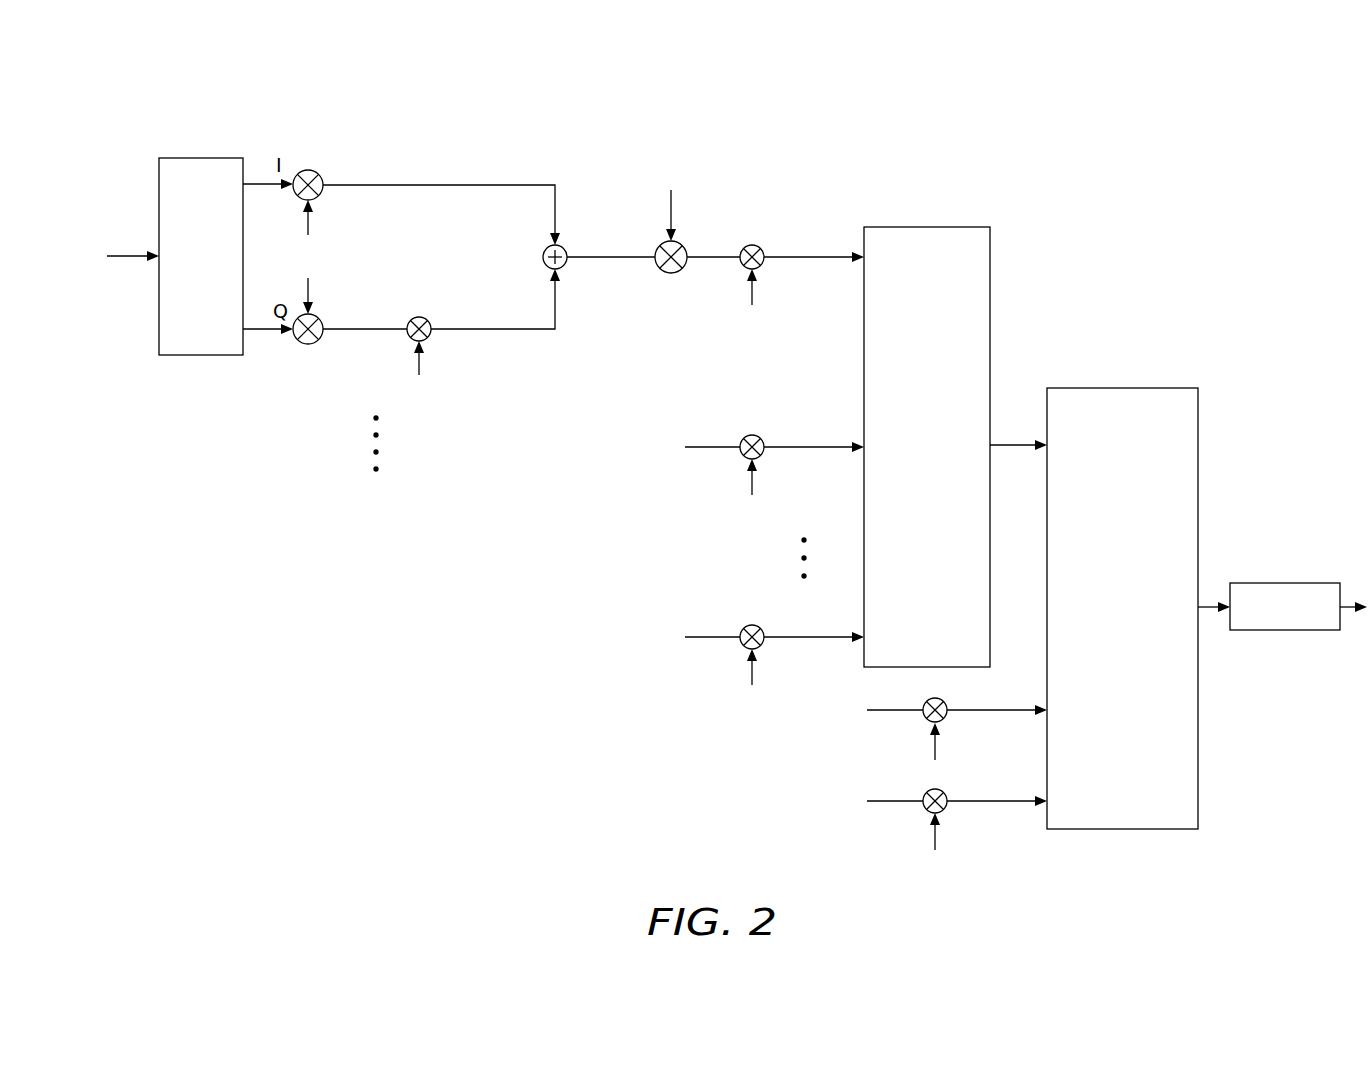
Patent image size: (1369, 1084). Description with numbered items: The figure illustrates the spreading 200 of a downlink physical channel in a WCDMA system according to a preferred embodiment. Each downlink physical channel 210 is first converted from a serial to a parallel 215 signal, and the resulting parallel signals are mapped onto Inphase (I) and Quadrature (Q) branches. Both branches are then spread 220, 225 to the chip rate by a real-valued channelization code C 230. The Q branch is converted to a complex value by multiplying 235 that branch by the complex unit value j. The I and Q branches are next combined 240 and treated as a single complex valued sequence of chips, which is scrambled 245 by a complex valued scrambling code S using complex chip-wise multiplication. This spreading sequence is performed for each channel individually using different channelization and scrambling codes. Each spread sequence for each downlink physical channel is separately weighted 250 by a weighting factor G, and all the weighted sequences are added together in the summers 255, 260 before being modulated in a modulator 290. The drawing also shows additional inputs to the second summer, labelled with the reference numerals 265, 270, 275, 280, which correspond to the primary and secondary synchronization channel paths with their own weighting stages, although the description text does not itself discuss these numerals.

The spreading 200 is at (1260, 188).
The downlink physical channel 210 is at (68, 210).
The serial to parallel conversion 215 is at (178, 157).
The I branch spreading 220 is at (317, 168).
The Q branch spreading 225 is at (318, 315).
The channelization code 230 is at (320, 255).
The multiplication by complex unit value 235 is at (427, 317).
The combining 240 is at (565, 243).
The scrambling 245 is at (658, 268).
The weighting 250 is at (757, 250).
The adder 255 is at (933, 225).
The adder 260 is at (1127, 386).
The primary synchronization channel P-SCH 265 is at (838, 712).
The secondary synchronization channel S-SCH 270 is at (838, 800).
The P-SCH gain mixer 275 is at (943, 702).
The S-SCH gain mixer 280 is at (922, 812).
The modulator 290 is at (1260, 582).